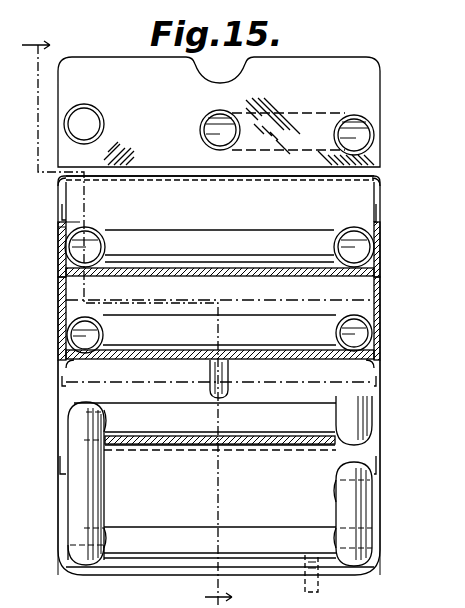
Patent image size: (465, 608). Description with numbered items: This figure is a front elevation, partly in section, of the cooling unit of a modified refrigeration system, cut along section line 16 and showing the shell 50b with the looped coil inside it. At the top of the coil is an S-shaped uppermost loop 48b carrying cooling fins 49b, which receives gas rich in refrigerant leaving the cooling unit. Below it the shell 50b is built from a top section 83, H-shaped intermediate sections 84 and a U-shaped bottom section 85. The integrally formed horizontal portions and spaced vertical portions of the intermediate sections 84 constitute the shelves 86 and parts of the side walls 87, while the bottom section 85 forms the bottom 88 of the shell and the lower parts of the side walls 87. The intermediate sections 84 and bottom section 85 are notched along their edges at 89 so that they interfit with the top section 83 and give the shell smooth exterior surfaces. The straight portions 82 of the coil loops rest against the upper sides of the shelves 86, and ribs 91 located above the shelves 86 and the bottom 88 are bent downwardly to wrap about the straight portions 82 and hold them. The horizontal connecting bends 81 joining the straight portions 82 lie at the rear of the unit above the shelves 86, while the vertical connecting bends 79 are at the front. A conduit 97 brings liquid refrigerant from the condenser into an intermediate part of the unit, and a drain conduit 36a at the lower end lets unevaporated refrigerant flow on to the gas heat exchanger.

The section line 16- 16 is at (144, 317).
The cooling fins 49b is at (322, 62).
The S-shaped uppermost loop 48b is at (348, 116).
The shell 50b is at (46, 294).
The top section 83 is at (30, 186).
The notches 89 is at (380, 212).
The side walls 87 is at (58, 330).
The horizontal connecting bends 81 is at (188, 236).
The straight portions 82 is at (106, 252).
The shelves 86 is at (216, 266).
The intermediate sections 84 is at (380, 250).
The ribs 91 is at (106, 330).
The conduit 97 is at (230, 390).
The vertical connecting bends 79 is at (336, 390).
The bottom section 85 is at (380, 500).
The bottom 88 is at (172, 566).
The drain conduit 36a is at (318, 594).